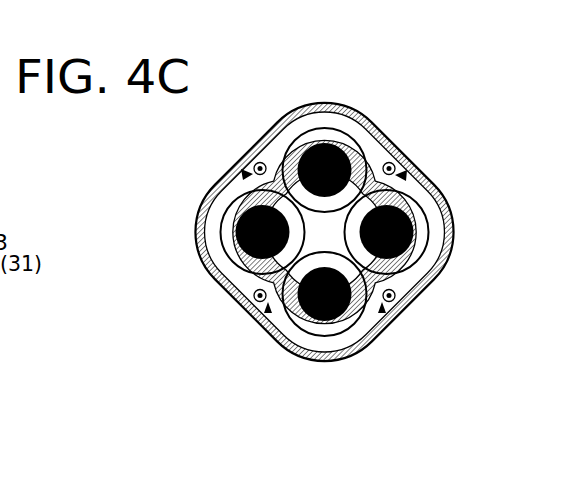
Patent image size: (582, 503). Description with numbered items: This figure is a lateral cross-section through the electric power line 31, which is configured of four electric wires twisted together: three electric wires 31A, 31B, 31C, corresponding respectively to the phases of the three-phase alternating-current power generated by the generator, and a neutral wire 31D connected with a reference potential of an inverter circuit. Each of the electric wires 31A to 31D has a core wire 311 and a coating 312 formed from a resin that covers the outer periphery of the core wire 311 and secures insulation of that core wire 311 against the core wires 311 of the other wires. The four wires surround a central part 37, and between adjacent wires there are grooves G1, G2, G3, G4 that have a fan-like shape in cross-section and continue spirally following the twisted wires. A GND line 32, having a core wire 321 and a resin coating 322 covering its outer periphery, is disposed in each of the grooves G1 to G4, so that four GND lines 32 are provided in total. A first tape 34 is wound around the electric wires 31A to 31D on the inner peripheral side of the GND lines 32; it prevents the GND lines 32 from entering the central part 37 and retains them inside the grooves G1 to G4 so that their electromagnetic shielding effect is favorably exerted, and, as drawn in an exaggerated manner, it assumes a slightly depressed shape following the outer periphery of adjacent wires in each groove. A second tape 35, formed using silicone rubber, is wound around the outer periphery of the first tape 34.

The electric power line 31 is at (328, 220).
The core wire 311 is at (303, 152).
The coating 312 is at (302, 128).
The electric wire 31A is at (320, 136).
The electric wire 31B is at (430, 244).
The electric wire 31C is at (326, 337).
The neutral wire 31D is at (208, 240).
The GND line 32 is at (330, 248).
The core wire 321 is at (406, 326).
The coating 322 is at (396, 300).
The first tape 34 is at (443, 202).
The second tape 35 is at (383, 152).
The central part 37 is at (325, 230).
The groove G1 is at (410, 172).
The groove G2 is at (382, 316).
The groove G3 is at (268, 316).
The groove G4 is at (238, 176).